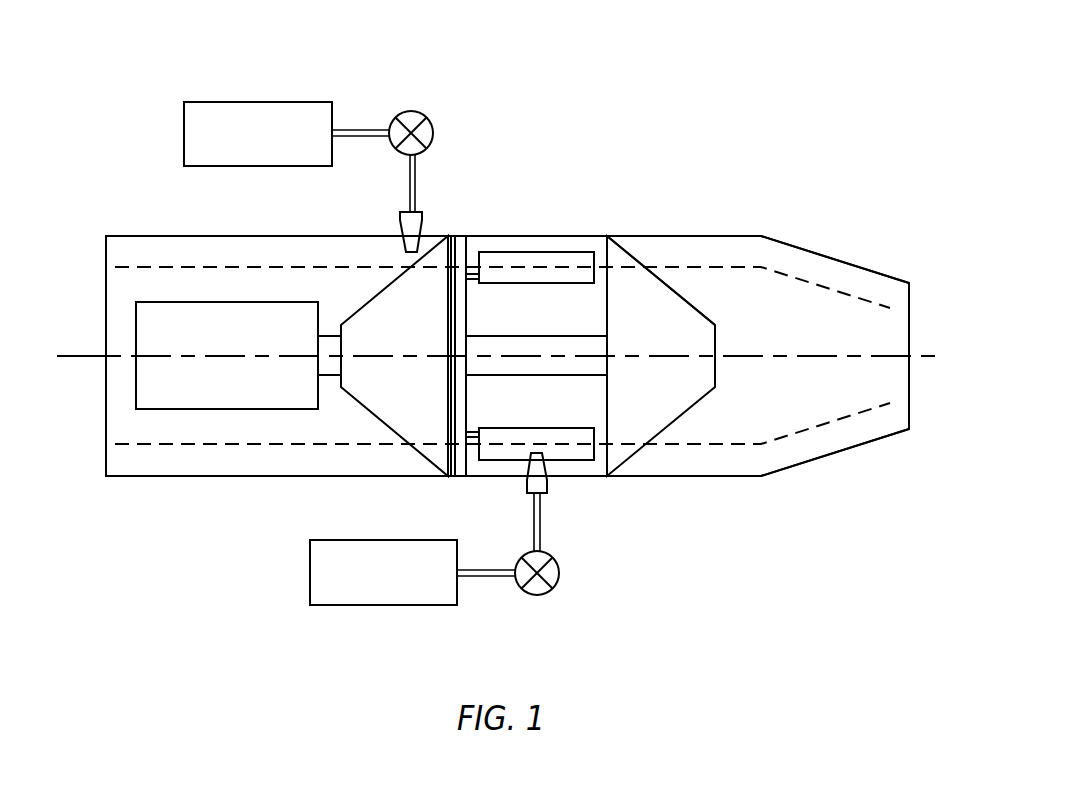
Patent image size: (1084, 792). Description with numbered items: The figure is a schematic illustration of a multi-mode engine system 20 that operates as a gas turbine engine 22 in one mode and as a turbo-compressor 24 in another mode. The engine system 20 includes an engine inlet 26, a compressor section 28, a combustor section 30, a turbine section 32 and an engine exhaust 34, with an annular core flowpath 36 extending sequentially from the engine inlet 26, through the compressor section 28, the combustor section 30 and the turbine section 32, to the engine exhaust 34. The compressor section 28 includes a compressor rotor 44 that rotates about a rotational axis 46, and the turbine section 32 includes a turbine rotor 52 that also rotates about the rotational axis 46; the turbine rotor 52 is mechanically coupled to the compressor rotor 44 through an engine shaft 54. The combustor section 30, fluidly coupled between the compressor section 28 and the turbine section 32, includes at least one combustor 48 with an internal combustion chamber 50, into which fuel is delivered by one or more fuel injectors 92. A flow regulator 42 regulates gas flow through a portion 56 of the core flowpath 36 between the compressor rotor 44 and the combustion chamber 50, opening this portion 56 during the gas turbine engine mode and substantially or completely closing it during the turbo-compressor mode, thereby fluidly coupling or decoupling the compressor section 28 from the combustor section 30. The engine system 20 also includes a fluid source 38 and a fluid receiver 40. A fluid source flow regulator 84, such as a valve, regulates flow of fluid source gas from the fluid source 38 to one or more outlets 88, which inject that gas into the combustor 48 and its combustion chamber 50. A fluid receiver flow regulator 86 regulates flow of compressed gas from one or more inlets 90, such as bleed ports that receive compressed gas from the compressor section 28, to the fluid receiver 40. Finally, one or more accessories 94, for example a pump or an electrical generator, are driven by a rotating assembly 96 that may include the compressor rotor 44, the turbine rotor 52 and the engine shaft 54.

The multi-mode engine system 20 is at (722, 80).
The gas turbine engine 22 is at (662, 222).
The turbo-compressor 24 is at (658, 477).
The engine inlet 26 is at (96, 268).
The compressor section 28 is at (387, 479).
The combustor section 30 is at (491, 480).
The turbine section 32 is at (624, 484).
The engine exhaust 34 is at (921, 403).
The core flowpath 36 is at (785, 270).
The fluid source 38 is at (352, 606).
The fluid receiver 40 is at (224, 102).
The flow regulator 42 is at (461, 226).
The compressor rotor 44 is at (362, 407).
The rotational axis 46 is at (62, 383).
The combustor 48 is at (556, 241).
The combustion chamber 50 is at (588, 262).
The turbine rotor 52 is at (680, 418).
The engine shaft 54 is at (590, 378).
The portion of the core flowpath 56 is at (464, 252).
The fluid source flow regulator 84 is at (537, 596).
The fluid receiver flow regulator 86 is at (411, 110).
The outlet 88 is at (525, 485).
The inlet 90 is at (400, 222).
The fuel injector 92 is at (475, 280).
The accessory 94 is at (214, 396).
The rotating assembly 96 is at (710, 300).